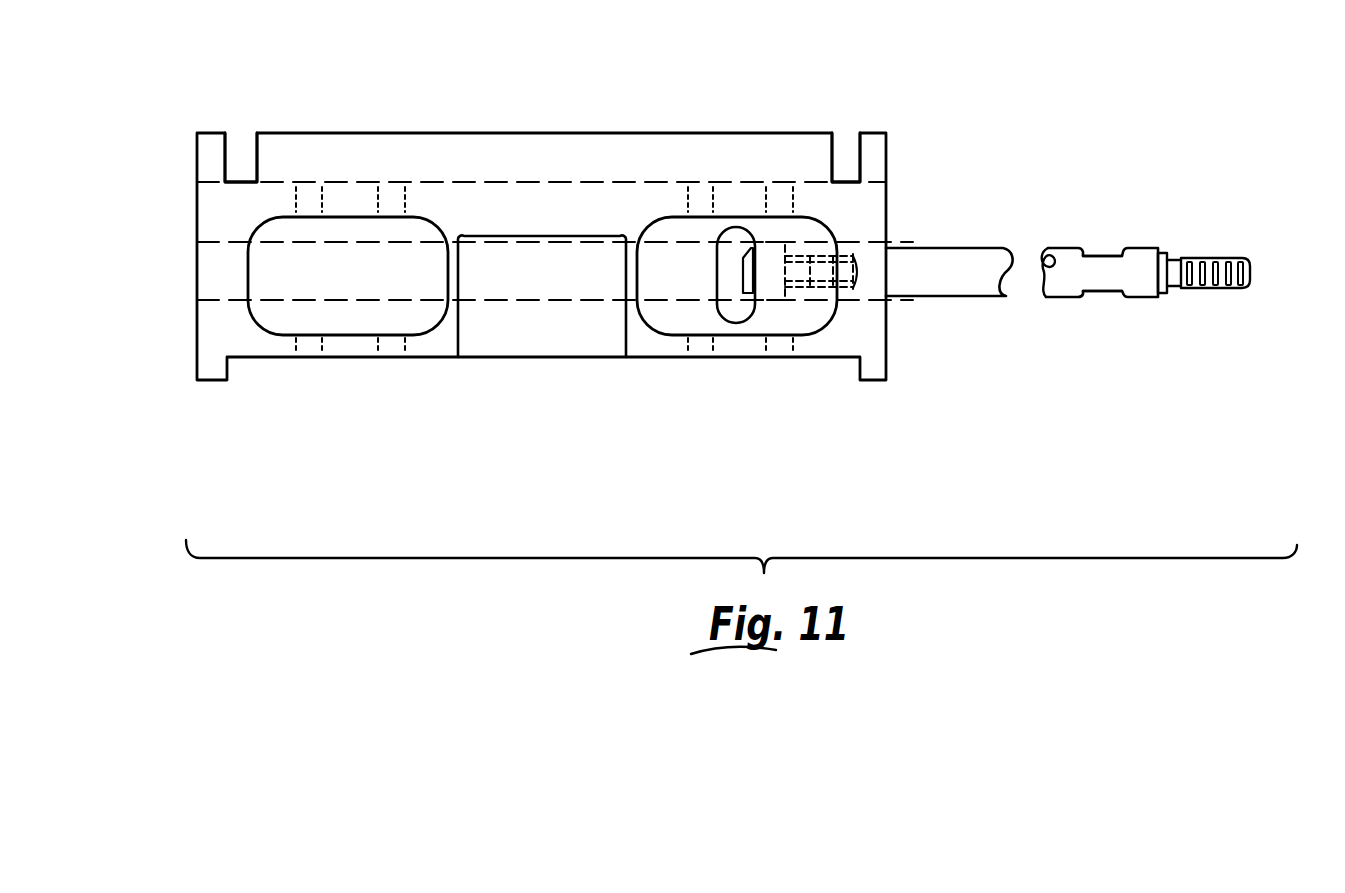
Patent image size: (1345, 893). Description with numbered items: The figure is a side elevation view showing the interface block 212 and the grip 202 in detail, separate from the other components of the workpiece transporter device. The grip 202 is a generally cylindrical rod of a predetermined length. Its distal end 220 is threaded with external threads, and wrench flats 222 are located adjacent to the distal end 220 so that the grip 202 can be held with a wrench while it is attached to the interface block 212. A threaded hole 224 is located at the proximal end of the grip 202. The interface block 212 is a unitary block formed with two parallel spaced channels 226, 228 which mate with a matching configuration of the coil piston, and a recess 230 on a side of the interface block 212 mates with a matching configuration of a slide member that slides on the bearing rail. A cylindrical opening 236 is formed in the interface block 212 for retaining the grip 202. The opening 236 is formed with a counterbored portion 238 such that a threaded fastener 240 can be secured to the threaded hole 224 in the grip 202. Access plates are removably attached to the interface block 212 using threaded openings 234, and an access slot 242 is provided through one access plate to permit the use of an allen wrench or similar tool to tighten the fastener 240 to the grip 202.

The grip 202 is at (1185, 249).
The interface block 212 is at (880, 192).
The distal end 220 is at (1225, 258).
The wrench flats 222 is at (1101, 256).
The threaded hole 224 is at (812, 285).
The channel 226 is at (240, 147).
The channel 228 is at (850, 147).
The recess 230 is at (343, 358).
The threaded openings 234 is at (308, 192).
The cylindrical opening 236 is at (870, 248).
The counterbored portion 238 is at (205, 260).
The threaded fastener 240 is at (745, 287).
The access slot 242 is at (732, 283).